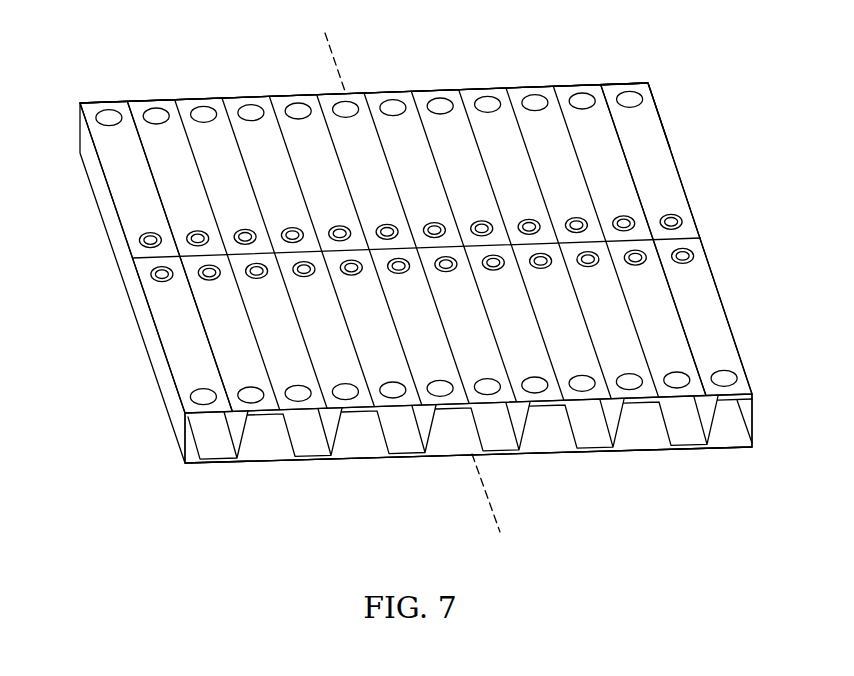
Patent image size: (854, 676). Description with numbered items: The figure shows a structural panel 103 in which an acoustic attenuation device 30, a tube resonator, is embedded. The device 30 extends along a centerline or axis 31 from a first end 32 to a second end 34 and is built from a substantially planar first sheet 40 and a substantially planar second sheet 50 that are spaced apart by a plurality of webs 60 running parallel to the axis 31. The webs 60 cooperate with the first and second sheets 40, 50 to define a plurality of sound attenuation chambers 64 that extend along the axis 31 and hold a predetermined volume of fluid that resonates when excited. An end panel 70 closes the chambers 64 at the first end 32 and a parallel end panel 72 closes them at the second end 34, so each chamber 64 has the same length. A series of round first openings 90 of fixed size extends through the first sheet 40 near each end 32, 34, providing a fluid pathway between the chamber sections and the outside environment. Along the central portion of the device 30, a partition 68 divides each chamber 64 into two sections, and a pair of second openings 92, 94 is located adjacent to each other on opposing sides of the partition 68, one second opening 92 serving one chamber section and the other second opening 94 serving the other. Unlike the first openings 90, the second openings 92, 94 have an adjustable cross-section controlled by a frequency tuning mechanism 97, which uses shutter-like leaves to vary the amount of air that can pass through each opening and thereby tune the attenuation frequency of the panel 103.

The acoustic attenuation device 30 is at (710, 106).
The axis 31 is at (505, 513).
The first end 32 is at (213, 493).
The second end 34 is at (115, 80).
The first sheet 40 is at (173, 354).
The second sheet 50 is at (255, 465).
The webs 60 is at (425, 135).
The sound attenuation chambers 64 is at (136, 192).
The partition 68 is at (142, 259).
The end panel 70 is at (661, 440).
The end panel 72 is at (618, 84).
The first openings 90 is at (104, 118).
The second opening 92 is at (160, 280).
The second opening 94 is at (146, 240).
The frequency tuning mechanism 97 is at (658, 214).
The structural panel 103 is at (628, 78).